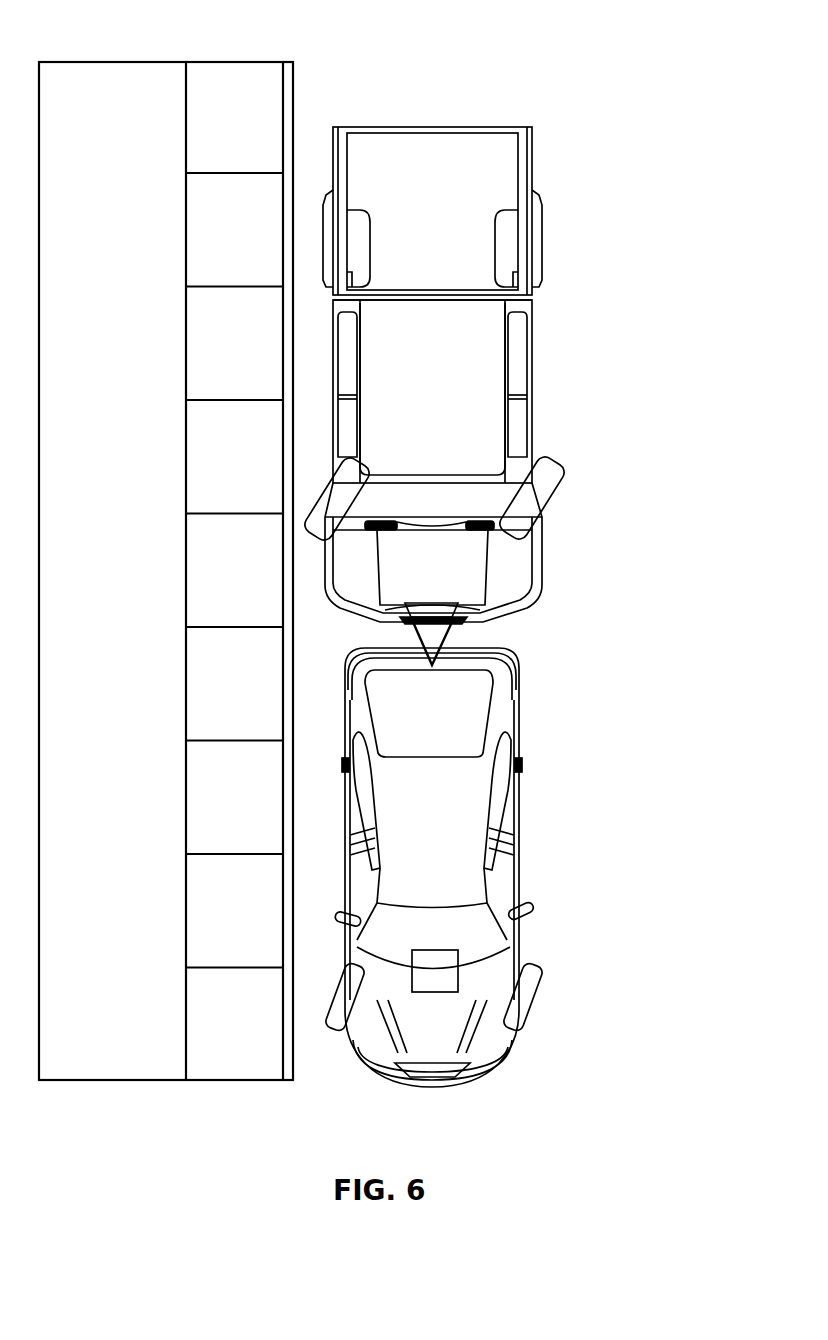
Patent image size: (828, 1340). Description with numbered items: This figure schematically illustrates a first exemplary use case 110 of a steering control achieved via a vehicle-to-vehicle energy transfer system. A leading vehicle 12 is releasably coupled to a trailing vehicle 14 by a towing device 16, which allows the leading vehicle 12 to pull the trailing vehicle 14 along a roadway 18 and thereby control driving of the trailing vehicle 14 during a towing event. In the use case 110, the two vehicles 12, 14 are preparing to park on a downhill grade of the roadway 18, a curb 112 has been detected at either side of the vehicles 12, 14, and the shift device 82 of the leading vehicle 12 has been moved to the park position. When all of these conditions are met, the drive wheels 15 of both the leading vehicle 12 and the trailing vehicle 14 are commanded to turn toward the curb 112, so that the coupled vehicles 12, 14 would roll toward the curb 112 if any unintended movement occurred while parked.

The curb 112 is at (237, 78).
The first exemplary use case 110 is at (706, 579).
The trailing vehicle 14 is at (432, 375).
The drive wheels 15 is at (533, 497).
The towing device 16 is at (450, 626).
The roadway 18 is at (476, 867).
The leading vehicle 12 is at (463, 792).
The shift device 82 is at (450, 982).